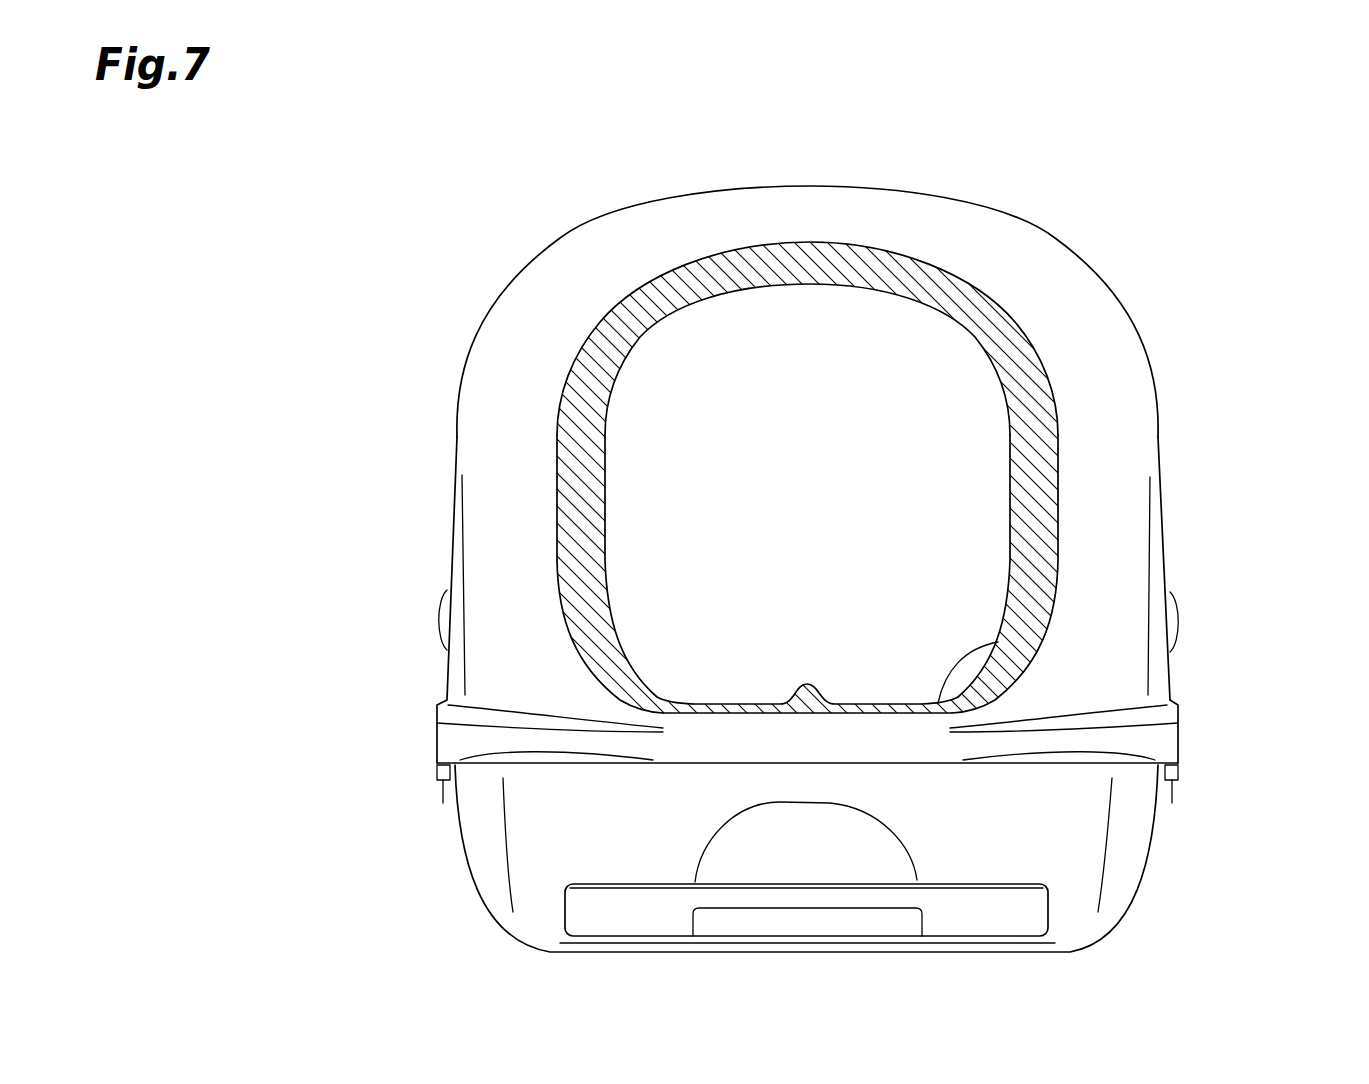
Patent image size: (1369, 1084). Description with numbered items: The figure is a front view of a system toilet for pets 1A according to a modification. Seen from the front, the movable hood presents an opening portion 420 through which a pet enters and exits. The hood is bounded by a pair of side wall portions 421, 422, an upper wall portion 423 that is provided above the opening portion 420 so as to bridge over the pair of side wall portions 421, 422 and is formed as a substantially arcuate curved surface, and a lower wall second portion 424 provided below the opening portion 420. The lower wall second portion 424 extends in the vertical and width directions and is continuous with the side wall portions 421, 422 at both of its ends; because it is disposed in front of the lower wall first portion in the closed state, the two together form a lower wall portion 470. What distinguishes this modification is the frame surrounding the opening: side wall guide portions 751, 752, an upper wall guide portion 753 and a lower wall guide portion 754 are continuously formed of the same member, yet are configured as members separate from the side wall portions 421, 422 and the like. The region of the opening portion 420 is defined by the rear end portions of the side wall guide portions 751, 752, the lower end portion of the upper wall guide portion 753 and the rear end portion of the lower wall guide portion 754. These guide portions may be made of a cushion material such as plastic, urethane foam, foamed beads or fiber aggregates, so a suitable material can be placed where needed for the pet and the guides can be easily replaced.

The system toilet for pets 1A is at (684, 524).
The opening portion 420 is at (836, 501).
The side wall portion 421 is at (493, 545).
The side wall portion 422 is at (1120, 545).
The upper wall portion 423 is at (786, 200).
The lower wall second portion 424 is at (873, 828).
The lower wall portion 470 is at (877, 740).
The side wall guide portion 751 is at (575, 465).
The side wall guide portion 752 is at (1035, 445).
The upper wall guide portion 753 is at (812, 262).
The lower wall guide portion 754 is at (998, 642).